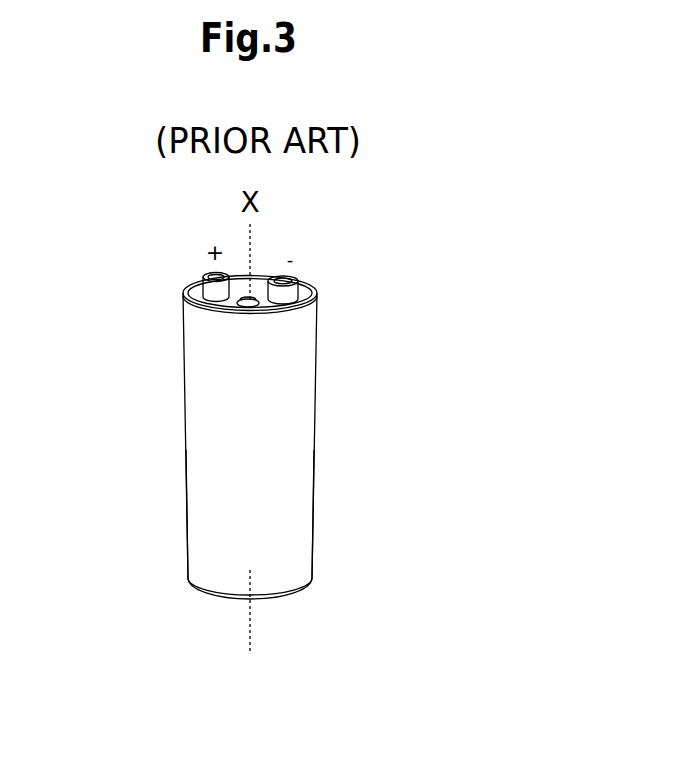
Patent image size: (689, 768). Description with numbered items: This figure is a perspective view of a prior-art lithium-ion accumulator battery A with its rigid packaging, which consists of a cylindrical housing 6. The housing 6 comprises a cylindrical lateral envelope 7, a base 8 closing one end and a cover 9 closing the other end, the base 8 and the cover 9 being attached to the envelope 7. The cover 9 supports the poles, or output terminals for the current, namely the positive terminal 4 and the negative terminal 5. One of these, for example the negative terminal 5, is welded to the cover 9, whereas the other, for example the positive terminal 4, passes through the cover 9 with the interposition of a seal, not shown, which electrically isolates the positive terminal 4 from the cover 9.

The battery A is at (153, 497).
The positive terminal 4 is at (214, 298).
The negative terminal 5 is at (287, 300).
The housing 6 is at (303, 422).
The cylindrical lateral envelope 7 is at (313, 500).
The base 8 is at (209, 596).
The cover 9 is at (311, 292).